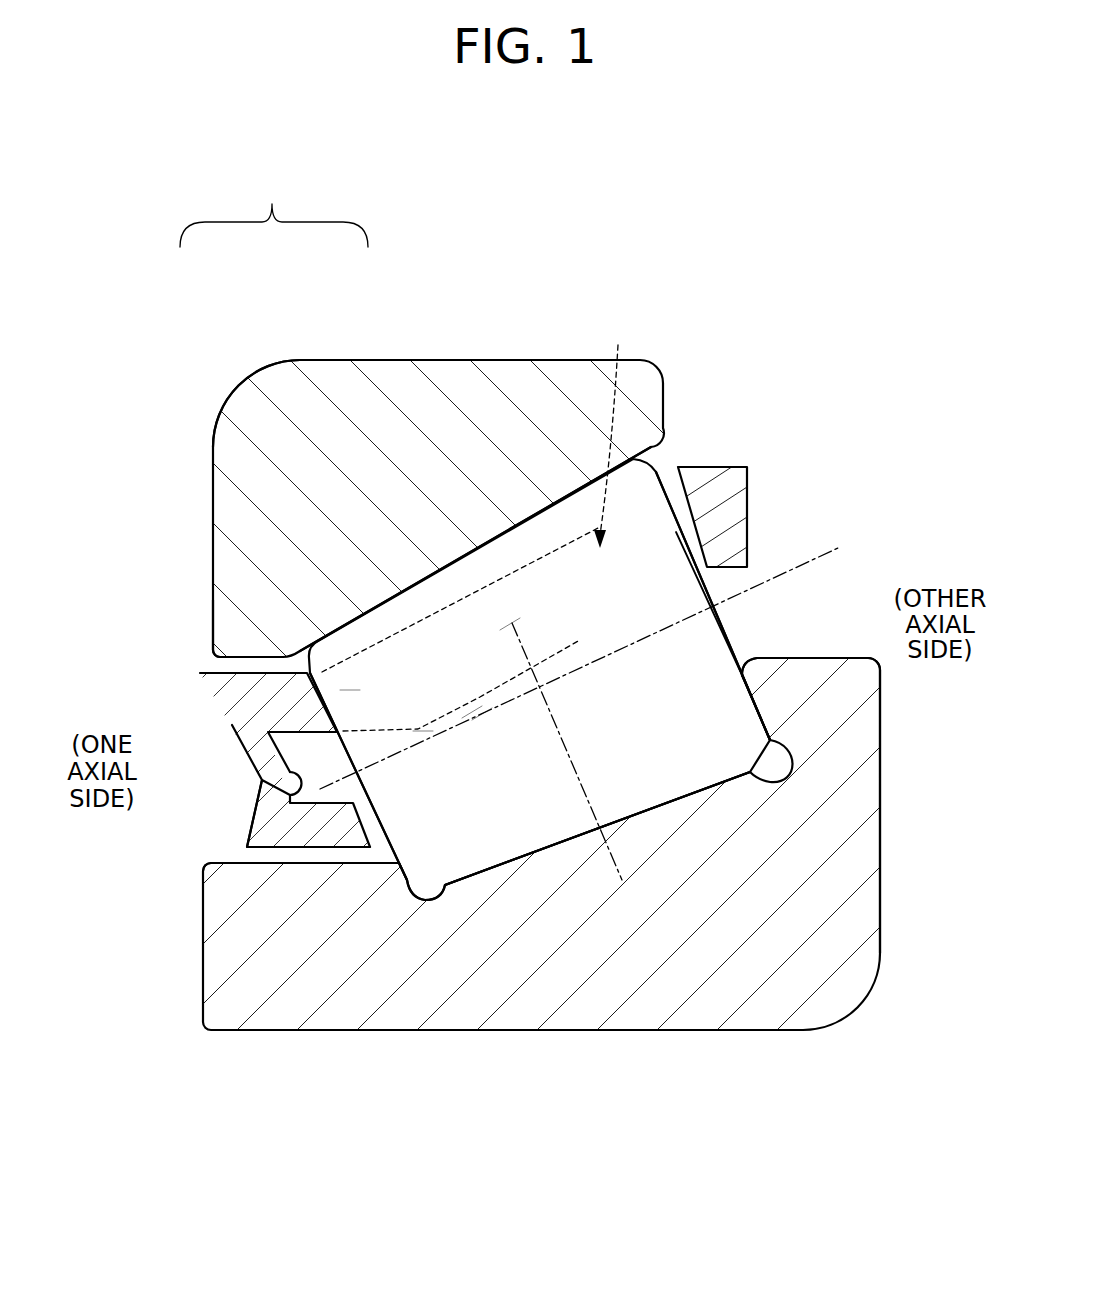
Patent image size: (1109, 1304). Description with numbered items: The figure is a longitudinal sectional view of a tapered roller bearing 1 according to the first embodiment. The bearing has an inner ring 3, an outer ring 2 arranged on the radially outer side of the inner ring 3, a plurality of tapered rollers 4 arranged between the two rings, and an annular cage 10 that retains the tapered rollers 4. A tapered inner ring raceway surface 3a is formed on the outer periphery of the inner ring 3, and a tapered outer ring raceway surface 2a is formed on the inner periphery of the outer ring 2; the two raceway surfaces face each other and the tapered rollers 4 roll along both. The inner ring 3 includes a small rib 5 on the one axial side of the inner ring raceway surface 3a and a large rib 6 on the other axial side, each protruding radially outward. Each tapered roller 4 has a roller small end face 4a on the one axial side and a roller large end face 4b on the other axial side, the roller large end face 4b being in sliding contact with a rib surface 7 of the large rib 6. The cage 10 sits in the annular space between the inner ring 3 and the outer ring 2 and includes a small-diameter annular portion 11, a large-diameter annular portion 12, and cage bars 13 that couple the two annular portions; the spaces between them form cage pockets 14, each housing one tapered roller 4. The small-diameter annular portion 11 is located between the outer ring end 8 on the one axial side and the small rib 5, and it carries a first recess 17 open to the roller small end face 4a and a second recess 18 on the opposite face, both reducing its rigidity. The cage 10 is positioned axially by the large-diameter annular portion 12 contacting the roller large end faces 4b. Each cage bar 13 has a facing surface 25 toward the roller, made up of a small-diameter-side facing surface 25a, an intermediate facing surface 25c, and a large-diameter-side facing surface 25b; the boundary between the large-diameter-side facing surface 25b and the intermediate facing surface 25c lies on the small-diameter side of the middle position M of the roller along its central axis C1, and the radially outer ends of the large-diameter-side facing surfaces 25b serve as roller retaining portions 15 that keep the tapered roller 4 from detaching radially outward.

The tapered roller bearing 1 is at (233, 382).
The outer ring 2 is at (456, 385).
The outer ring raceway surface 2a is at (528, 508).
The inner ring 3 is at (578, 1000).
The inner ring raceway surface 3a is at (553, 845).
The tapered roller 4 is at (633, 767).
The roller small end face 4a is at (340, 750).
The roller large end face 4b is at (727, 613).
The small rib 5 is at (217, 908).
The large rib 6 is at (855, 724).
The rib surface 7 is at (747, 693).
The outer ring end 8 is at (233, 626).
The cage 10 is at (735, 458).
The small-diameter annular portion 11 is at (203, 686).
The large-diameter annular portion 12 is at (727, 520).
The cage bar 13 is at (512, 623).
The cage pocket 14 is at (614, 430).
The roller retaining portion 15 is at (480, 713).
The first recess 17 is at (290, 801).
The second recess 18 is at (263, 783).
The facing surface 25 is at (274, 208).
The small-diameter-side facing surface 25a is at (348, 680).
The large-diameter-side facing surface 25b is at (472, 712).
The intermediate facing surface 25c is at (423, 731).
The central axis C1 is at (830, 566).
The middle position M is at (597, 873).